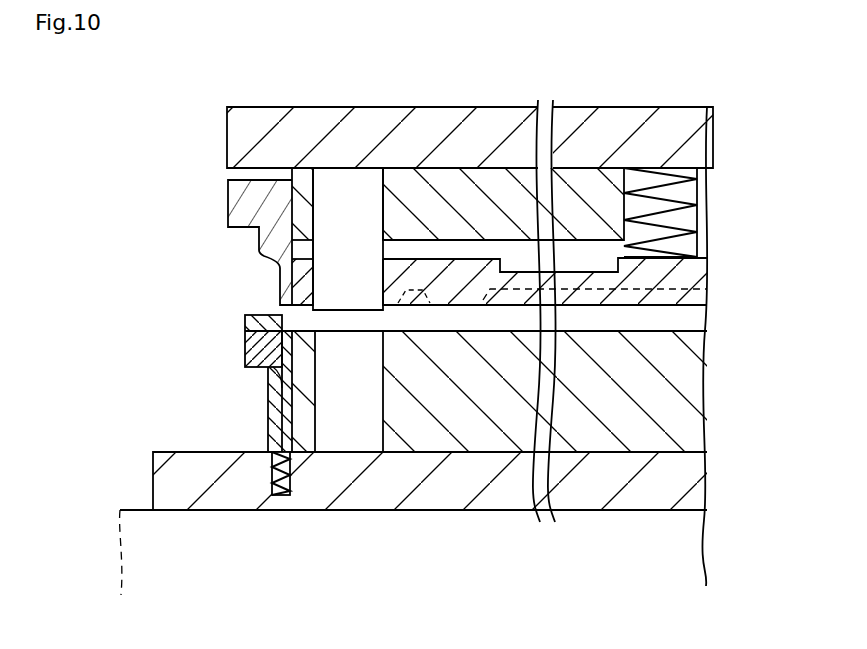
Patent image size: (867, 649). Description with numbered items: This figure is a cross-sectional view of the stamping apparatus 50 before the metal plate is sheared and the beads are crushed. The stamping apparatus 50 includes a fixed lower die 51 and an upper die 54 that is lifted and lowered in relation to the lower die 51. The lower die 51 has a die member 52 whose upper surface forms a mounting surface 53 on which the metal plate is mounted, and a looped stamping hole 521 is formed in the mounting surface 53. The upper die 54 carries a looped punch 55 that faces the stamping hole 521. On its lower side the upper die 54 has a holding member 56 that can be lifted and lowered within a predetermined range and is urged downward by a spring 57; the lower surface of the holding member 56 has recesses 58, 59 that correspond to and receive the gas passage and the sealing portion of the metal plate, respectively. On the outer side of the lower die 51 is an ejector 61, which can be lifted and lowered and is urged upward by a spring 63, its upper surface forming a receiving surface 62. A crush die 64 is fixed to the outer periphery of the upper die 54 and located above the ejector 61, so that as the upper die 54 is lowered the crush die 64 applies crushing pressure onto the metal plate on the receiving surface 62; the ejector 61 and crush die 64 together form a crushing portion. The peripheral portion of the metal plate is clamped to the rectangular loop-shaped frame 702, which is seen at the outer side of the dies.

The stamping apparatus 50 is at (689, 104).
The lower die 51 is at (703, 432).
The die member 52 is at (703, 405).
The mounting surface 53 is at (700, 331).
The upper die 54 is at (494, 108).
The punch 55 is at (386, 207).
The holding member 56 is at (712, 262).
The spring 57 is at (686, 197).
The recess 58 is at (707, 289).
The recess 59 is at (423, 291).
The ejector 61 is at (268, 412).
The receiving surface 62 is at (282, 330).
The spring 63 is at (283, 496).
The crush die 64 is at (228, 198).
The stamping hole 521 is at (385, 380).
The frame 702 is at (245, 324).